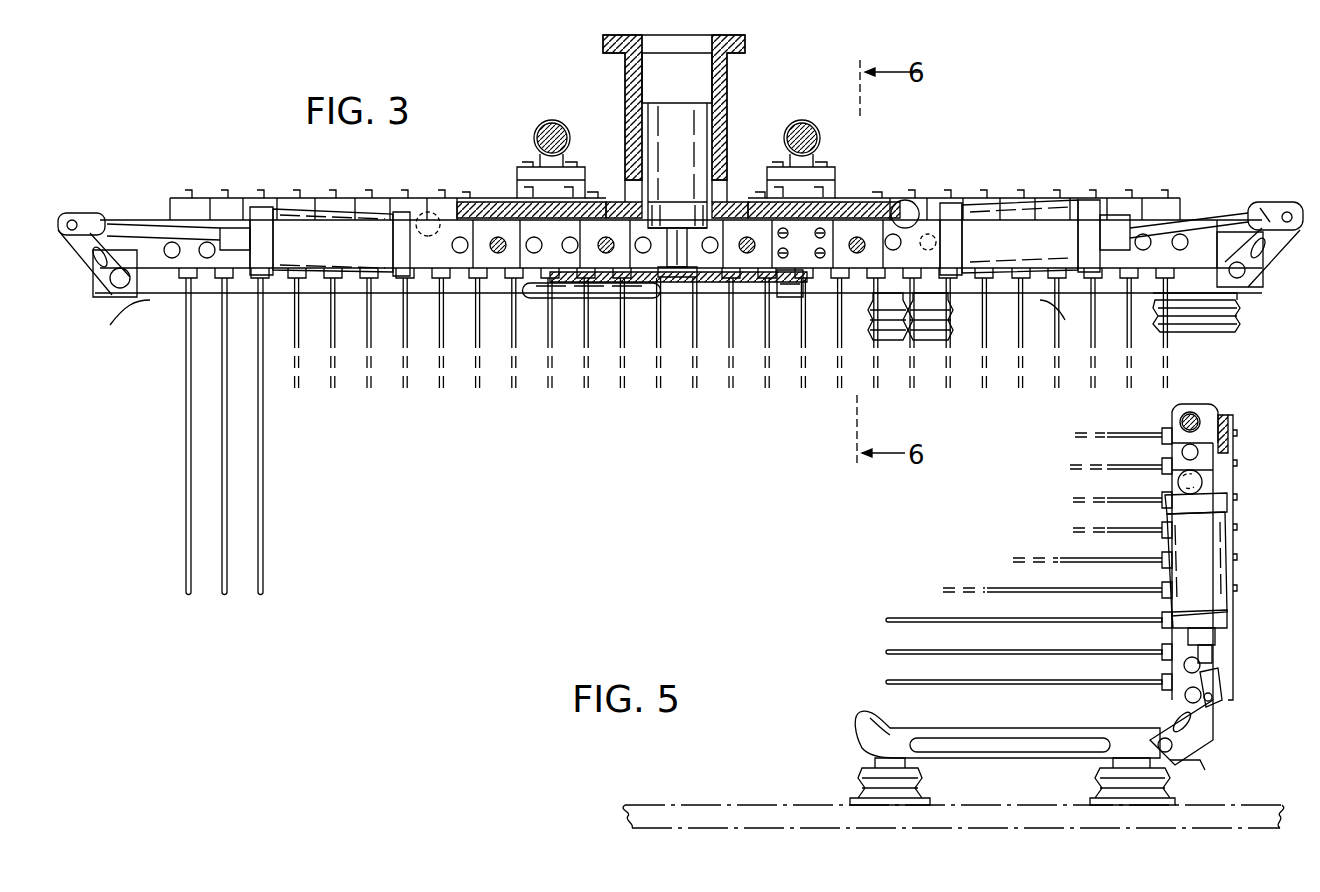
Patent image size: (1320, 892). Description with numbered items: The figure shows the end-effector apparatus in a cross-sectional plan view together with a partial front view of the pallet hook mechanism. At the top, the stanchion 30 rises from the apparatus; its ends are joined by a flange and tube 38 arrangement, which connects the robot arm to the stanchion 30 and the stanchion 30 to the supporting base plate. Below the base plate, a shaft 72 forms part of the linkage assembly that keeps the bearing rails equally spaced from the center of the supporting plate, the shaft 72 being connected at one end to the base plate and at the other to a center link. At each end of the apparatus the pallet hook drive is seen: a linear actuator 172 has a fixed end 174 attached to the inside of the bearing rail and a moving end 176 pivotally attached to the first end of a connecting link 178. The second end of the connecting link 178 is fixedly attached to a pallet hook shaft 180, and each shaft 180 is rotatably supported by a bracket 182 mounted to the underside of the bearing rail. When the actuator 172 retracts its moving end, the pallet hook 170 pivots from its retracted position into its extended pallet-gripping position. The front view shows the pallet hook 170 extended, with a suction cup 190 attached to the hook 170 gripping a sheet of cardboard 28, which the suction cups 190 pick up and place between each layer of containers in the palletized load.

In FIG. 3, the stanchion 30 is at (726, 96).
In FIG. 3, the tube 38 is at (712, 152).
In FIG. 3, the shaft 72 is at (707, 287).
In FIG. 3, the moving end 176 is at (1290, 212).
In FIG. 5, the moving end 176 is at (1212, 655).
In FIG. 3, the connecting link 178 is at (1268, 255).
In FIG. 5, the connecting link 178 is at (1210, 725).
In FIG. 3, the pallet hook shaft 180 is at (1238, 298).
In FIG. 5, the pallet hook shaft 180 is at (1178, 760).
In FIG. 3, the bracket 182 is at (108, 300).
In FIG. 5, the fixed end 174 is at (1210, 482).
In FIG. 5, the linear actuator 172 is at (1225, 565).
In FIG. 5, the pallet hook 170 is at (882, 715).
In FIG. 5, the suction cup 190 is at (868, 778).
In FIG. 5, the sheet of cardboard 28 is at (622, 807).